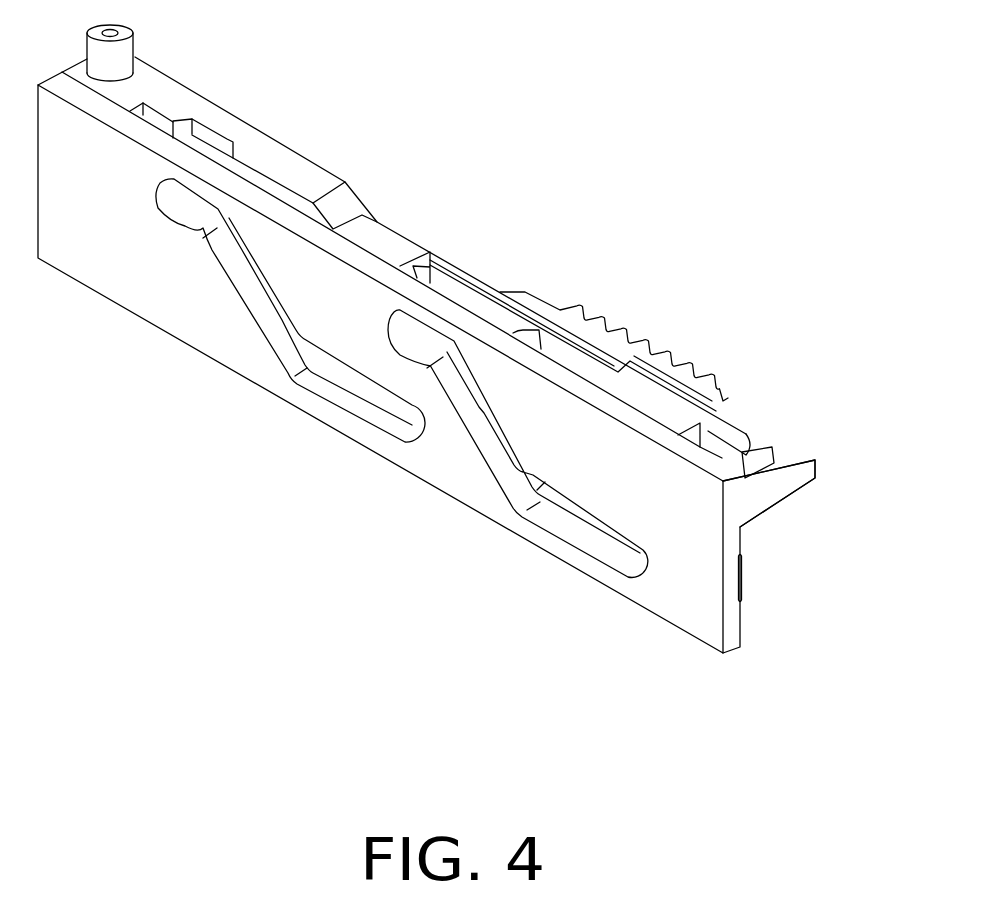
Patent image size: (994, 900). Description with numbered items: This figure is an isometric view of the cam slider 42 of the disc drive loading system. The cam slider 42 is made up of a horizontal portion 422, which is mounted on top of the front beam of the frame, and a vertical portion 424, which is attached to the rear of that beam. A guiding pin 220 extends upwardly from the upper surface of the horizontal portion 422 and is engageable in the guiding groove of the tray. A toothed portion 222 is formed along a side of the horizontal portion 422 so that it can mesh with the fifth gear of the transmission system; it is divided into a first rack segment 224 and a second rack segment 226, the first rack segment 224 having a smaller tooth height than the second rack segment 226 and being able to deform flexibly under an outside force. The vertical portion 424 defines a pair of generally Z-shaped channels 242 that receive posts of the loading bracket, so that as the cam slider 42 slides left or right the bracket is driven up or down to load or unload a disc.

The cam slider 42 is at (605, 92).
The guiding pin 220 is at (117, 53).
The toothed portion 222 is at (653, 335).
The first rack segment 224 is at (720, 398).
The second rack segment 226 is at (660, 358).
The Z-shaped channels 242 is at (350, 393).
The horizontal portion 422 is at (783, 482).
The vertical portion 424 is at (730, 627).